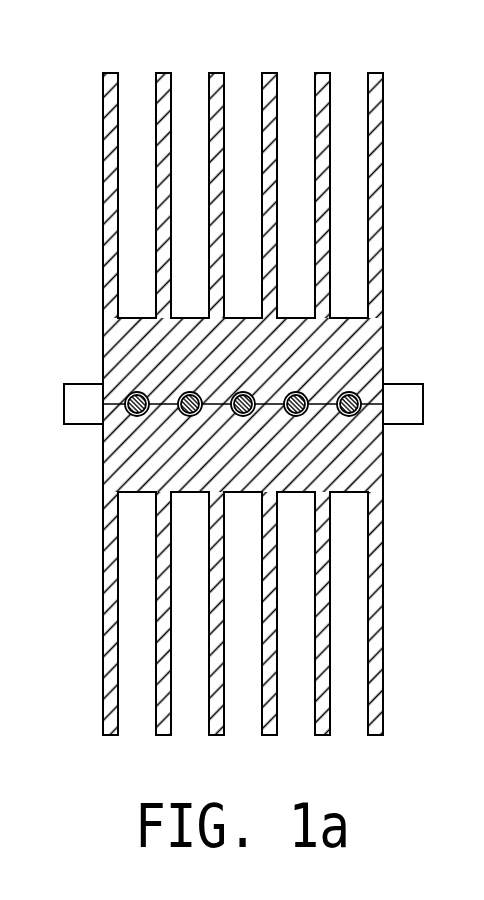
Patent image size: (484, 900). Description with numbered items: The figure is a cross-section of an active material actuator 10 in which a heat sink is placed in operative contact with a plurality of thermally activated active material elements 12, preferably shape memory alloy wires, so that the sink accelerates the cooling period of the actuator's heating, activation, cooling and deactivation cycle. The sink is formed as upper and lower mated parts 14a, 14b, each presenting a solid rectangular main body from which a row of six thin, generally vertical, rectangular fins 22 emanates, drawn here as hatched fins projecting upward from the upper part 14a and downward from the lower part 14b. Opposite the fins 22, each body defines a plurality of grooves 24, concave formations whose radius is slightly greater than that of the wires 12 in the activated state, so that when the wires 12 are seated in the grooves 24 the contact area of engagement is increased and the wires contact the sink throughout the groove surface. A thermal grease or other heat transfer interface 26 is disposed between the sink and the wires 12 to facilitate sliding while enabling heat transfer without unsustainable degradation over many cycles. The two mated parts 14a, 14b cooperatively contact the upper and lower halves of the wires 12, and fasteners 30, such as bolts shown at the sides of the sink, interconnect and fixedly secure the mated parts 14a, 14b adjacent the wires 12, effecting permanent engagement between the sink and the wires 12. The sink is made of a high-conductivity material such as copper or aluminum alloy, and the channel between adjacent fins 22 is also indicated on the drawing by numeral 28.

The actuator 10 is at (263, 372).
The active material element 12 is at (282, 410).
The upper mated part 14a is at (95, 262).
The lower mated part 14b is at (243, 613).
The fins 22 is at (383, 608).
The grooves 24 is at (353, 416).
The heat transfer interface 26 is at (349, 392).
The channel between fins 28 is at (358, 232).
The fasteners 30 is at (423, 413).